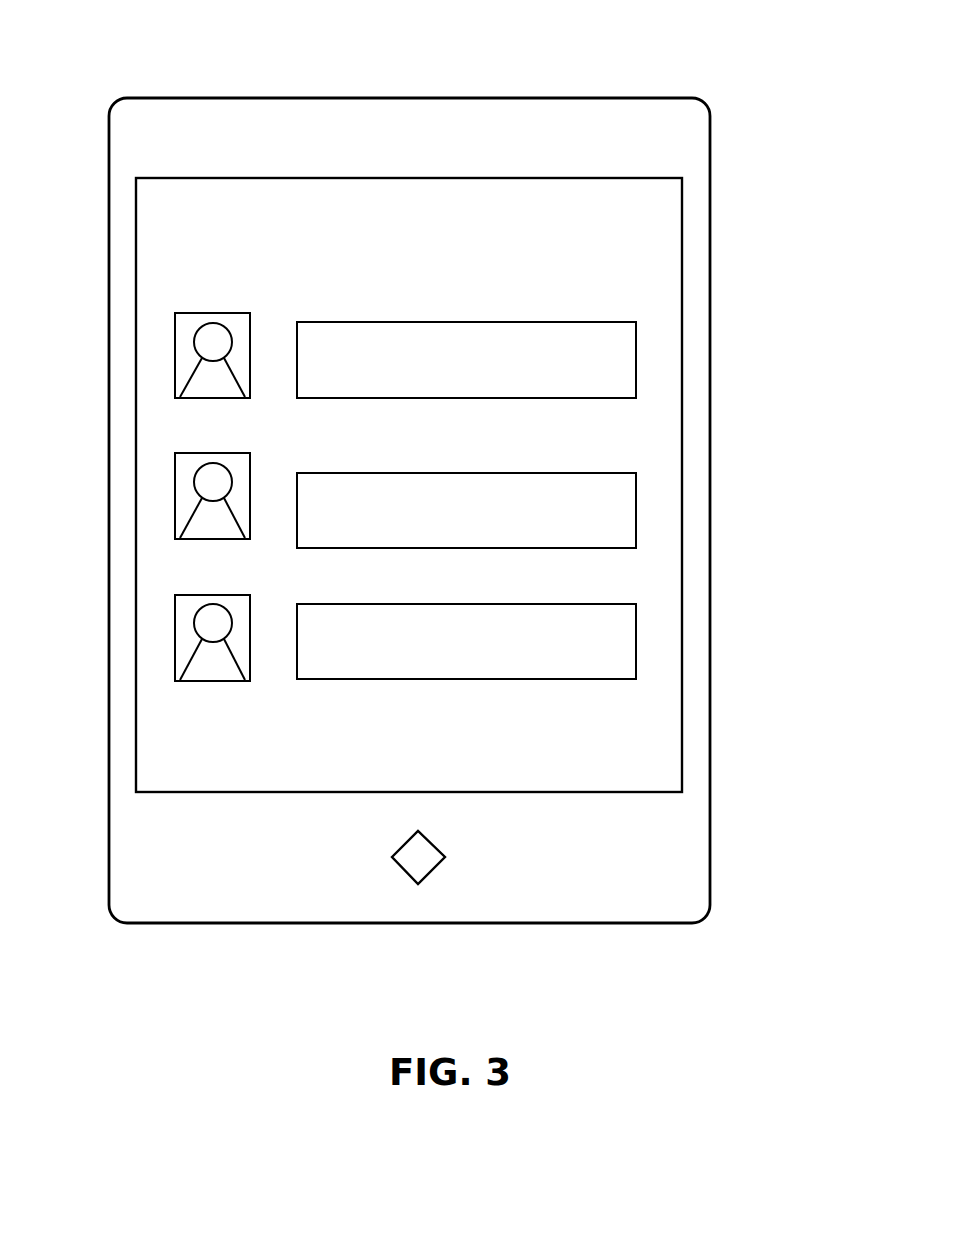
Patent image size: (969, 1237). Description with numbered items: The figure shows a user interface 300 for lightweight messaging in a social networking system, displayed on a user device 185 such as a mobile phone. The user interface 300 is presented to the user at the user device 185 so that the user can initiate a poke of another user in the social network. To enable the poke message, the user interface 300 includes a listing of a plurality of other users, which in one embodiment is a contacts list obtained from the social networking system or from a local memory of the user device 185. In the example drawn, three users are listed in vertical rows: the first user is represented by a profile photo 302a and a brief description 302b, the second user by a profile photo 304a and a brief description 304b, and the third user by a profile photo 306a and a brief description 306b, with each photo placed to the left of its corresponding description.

The user device 185 is at (557, 98).
The user interface 300 is at (631, 217).
The profile photo 302a is at (185, 313).
The brief description 302b is at (615, 322).
The profile photo 304a is at (185, 453).
The brief description 304b is at (615, 473).
The profile photo 306a is at (185, 595).
The brief description 306b is at (615, 604).